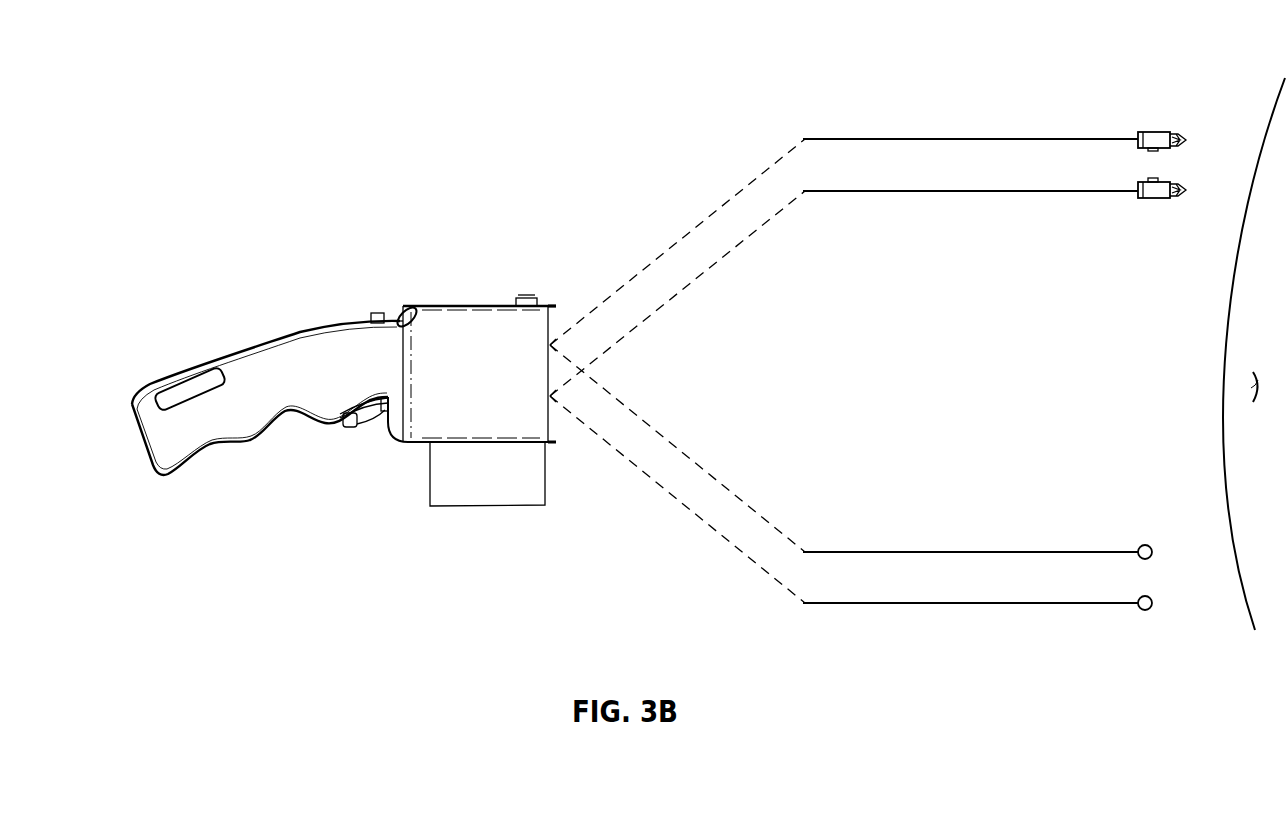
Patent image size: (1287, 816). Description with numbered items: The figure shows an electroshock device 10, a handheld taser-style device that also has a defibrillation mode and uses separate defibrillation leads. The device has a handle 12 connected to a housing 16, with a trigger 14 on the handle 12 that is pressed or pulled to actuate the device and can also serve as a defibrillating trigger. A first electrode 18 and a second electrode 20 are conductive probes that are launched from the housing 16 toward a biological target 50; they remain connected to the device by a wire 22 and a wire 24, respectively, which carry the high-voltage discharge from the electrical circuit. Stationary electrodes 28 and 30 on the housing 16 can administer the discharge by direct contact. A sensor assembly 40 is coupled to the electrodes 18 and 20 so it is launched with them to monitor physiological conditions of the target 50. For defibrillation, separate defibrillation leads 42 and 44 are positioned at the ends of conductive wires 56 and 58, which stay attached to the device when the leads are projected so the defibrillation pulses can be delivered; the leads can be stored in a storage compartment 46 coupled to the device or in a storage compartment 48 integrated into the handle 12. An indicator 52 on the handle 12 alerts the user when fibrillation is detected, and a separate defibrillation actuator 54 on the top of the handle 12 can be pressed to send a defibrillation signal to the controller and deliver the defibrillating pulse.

The electroshock device 10 is at (268, 270).
The handle 12 is at (163, 478).
The trigger 14 is at (357, 418).
The housing 16 is at (493, 303).
The first electrode 18 is at (1147, 130).
The second electrode 20 is at (1145, 200).
The wire 22 is at (947, 138).
The wire 24 is at (947, 190).
The electrode 28 is at (555, 305).
The electrode 30 is at (553, 447).
The sensor assembly 40 is at (527, 295).
The defibrillation lead 42 is at (1148, 545).
The defibrillation lead 44 is at (1148, 596).
The storage compartment 46 is at (482, 493).
The storage compartment 48 is at (167, 397).
The biological target 50 is at (1228, 80).
The indicator 52 is at (403, 309).
The defibrillation actuator 54 is at (377, 312).
The wire 56 is at (947, 551).
The wire 58 is at (947, 602).